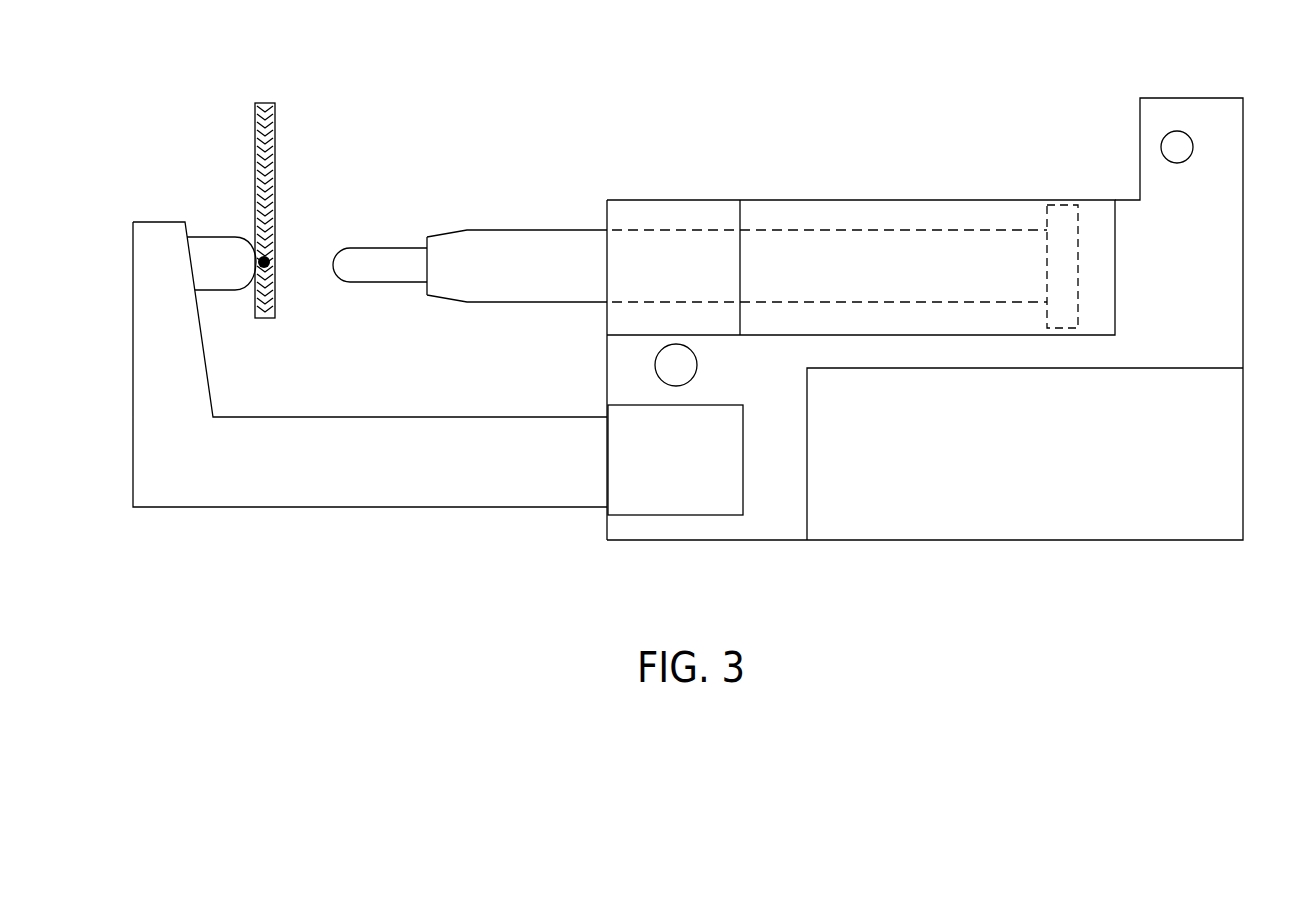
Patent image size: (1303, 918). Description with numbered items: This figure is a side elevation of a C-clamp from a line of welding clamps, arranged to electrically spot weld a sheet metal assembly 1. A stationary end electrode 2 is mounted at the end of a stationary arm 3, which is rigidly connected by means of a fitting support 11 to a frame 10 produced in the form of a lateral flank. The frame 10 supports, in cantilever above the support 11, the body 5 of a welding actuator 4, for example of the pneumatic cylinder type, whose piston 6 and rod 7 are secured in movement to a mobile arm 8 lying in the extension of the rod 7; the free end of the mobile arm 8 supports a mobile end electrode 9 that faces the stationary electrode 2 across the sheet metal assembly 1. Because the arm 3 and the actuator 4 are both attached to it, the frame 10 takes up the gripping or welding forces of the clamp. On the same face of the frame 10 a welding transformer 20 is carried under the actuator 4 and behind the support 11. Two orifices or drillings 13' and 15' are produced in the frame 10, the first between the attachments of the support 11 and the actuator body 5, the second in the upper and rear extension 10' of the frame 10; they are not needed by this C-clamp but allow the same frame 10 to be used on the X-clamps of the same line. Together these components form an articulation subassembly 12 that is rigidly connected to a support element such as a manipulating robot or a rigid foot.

The sheet metal assembly 1 is at (244, 119).
The stationary end electrode 2 is at (215, 236).
The stationary arm 3 is at (193, 481).
The welding actuator 4 is at (1133, 234).
The body 5 is at (693, 210).
The piston 6 is at (1071, 200).
The rod 7 is at (631, 259).
The mobile arm 8 is at (523, 242).
The mobile end electrode 9 is at (383, 241).
The frame 10 is at (1012, 480).
The upper and rear extension 10' is at (1219, 82).
The fitting support 11 is at (697, 502).
The articulation subassembly 12 is at (570, 528).
The orifice 13' is at (636, 468).
The orifice 15' is at (1165, 99).
The welding transformer 20 is at (1172, 507).